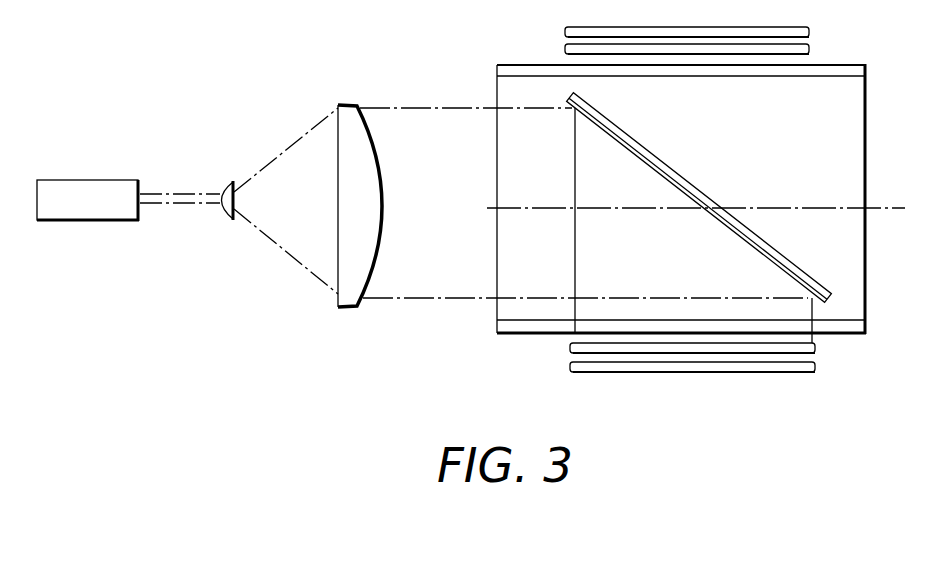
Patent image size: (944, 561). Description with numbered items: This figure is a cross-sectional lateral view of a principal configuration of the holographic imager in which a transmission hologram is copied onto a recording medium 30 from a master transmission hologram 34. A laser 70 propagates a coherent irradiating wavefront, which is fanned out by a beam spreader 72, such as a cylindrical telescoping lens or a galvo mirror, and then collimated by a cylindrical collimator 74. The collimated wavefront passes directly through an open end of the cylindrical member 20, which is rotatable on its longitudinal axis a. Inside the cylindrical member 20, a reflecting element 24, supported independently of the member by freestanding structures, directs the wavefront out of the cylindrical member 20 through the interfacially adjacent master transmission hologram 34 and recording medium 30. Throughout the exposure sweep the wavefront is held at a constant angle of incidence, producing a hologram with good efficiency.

The laser 70 is at (110, 180).
The beam spreader 72 is at (228, 182).
The cylindrical collimator 74 is at (348, 105).
The cylindrical member 20 is at (486, 65).
The reflecting element 24 is at (713, 202).
The transmissive master 34 is at (816, 348).
The recording medium 30 is at (816, 366).
The axis a is at (888, 207).